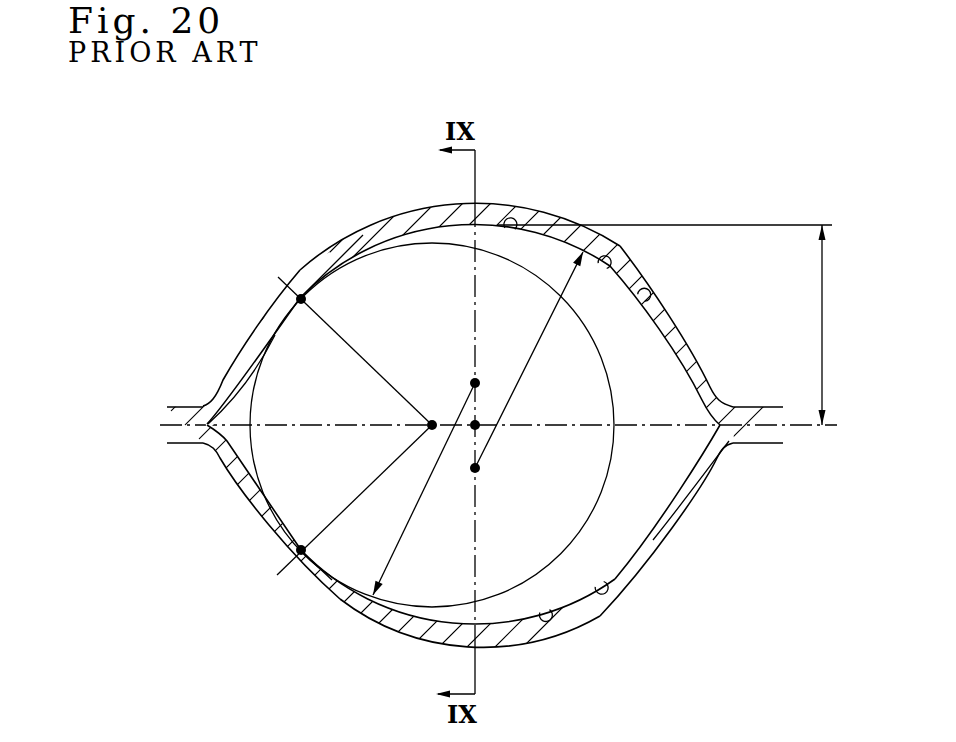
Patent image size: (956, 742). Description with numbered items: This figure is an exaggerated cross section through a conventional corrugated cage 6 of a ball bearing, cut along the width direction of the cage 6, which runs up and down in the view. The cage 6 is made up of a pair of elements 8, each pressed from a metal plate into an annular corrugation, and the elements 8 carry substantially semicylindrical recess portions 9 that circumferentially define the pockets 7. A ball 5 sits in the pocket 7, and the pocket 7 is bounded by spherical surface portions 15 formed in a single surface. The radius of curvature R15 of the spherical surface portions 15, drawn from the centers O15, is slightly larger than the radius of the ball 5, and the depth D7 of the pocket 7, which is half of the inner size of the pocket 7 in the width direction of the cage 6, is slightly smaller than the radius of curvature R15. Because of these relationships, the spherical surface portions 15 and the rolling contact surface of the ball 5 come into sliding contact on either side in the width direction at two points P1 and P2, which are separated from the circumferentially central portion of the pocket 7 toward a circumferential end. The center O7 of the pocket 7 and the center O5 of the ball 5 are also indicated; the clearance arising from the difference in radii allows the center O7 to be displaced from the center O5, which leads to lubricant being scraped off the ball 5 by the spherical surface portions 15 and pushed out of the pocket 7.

The ball 5 is at (278, 382).
The cage 6 is at (672, 568).
The pocket 7 is at (660, 284).
The element 8 is at (390, 236).
The semicylindrical recess portion 9 is at (608, 263).
The spherical surface portion 15 is at (508, 226).
The contact point P1 is at (299, 297).
The contact point P2 is at (302, 554).
The center of ball O5 is at (430, 422).
The center of pocket O7 is at (480, 428).
The center of spherical surface portion O15 is at (512, 527).
The radius of curvature of spherical surface portion R15 is at (540, 347).
The depth of pocket D7 is at (667, 325).